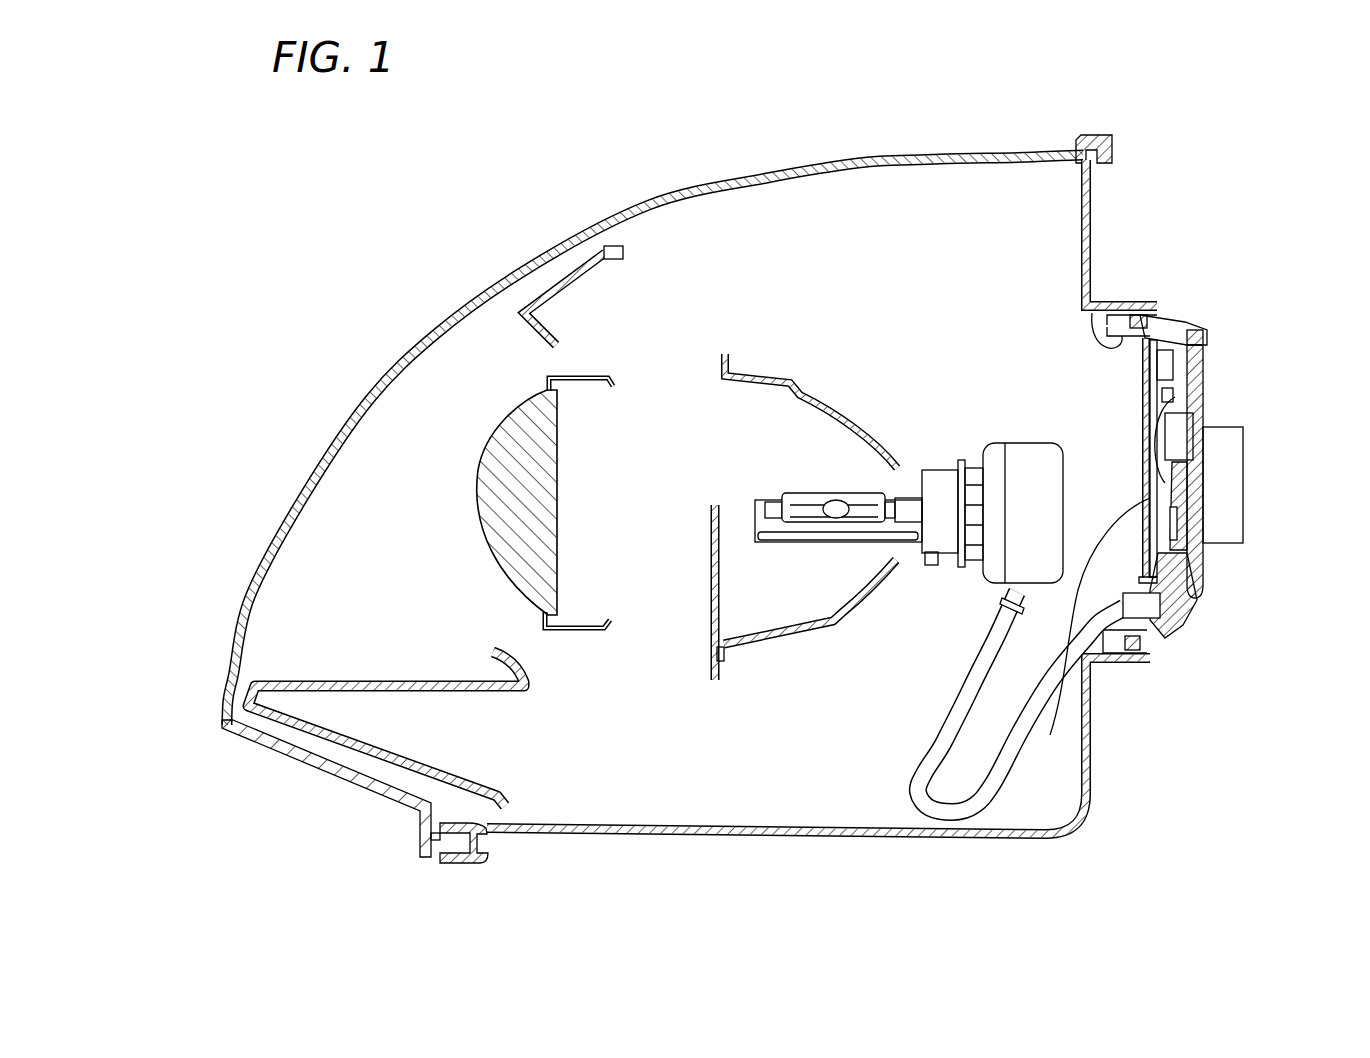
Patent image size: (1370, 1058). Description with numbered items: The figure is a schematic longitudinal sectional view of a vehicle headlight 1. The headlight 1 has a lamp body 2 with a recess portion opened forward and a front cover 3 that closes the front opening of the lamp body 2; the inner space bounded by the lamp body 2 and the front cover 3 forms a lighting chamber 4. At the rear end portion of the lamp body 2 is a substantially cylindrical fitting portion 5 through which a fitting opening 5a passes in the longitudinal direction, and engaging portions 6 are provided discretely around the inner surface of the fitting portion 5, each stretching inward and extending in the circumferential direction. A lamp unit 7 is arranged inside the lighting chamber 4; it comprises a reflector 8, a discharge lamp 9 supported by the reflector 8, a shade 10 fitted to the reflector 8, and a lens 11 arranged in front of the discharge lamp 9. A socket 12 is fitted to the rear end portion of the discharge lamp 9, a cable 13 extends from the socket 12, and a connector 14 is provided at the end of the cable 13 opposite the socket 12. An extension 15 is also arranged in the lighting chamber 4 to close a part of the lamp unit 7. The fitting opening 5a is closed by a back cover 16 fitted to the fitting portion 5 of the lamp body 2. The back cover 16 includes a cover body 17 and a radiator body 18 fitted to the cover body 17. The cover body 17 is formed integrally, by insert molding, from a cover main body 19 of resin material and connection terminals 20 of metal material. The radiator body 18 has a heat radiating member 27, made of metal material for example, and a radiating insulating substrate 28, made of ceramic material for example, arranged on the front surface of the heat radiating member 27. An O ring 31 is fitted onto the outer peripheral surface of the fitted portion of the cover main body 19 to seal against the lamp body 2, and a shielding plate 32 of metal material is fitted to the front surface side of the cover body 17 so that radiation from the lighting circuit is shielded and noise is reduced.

The vehicle headlight 1 is at (433, 220).
The lamp body 2 is at (1107, 227).
The front cover 3 is at (623, 207).
The lighting chamber 4 is at (853, 279).
The fitting portion 5 is at (1130, 306).
The fitting opening 5a is at (1162, 320).
The engaging portion 6 is at (1092, 312).
The lamp unit 7 is at (755, 362).
The reflector 8 is at (777, 381).
The discharge lamp 9 is at (860, 495).
The shade 10 is at (722, 591).
The lens 11 is at (510, 427).
The socket 12 is at (1030, 452).
The cable 13 is at (1027, 727).
The connector 14 is at (1180, 585).
The extension 15 is at (345, 665).
The back cover 16 is at (1222, 330).
The cover body 17 is at (1197, 327).
The radiator body 18 is at (1203, 372).
The cover main body 19 is at (1197, 601).
The connection terminal 20 is at (1177, 397).
The heat radiating member 27 is at (1197, 567).
The radiating insulating substrate 28 is at (1200, 487).
The O ring 31 is at (1150, 312).
The shielding plate 32 is at (1087, 687).